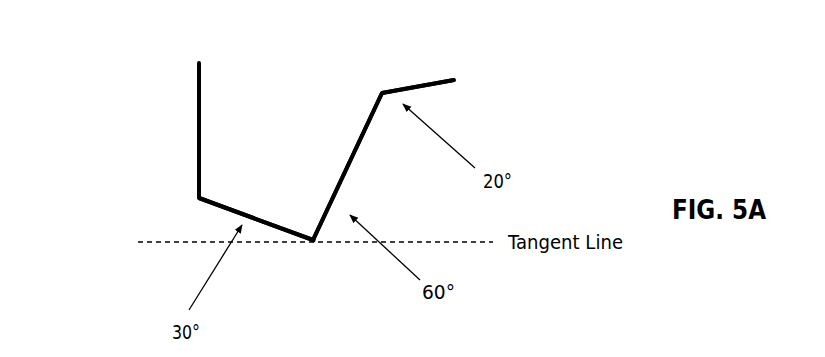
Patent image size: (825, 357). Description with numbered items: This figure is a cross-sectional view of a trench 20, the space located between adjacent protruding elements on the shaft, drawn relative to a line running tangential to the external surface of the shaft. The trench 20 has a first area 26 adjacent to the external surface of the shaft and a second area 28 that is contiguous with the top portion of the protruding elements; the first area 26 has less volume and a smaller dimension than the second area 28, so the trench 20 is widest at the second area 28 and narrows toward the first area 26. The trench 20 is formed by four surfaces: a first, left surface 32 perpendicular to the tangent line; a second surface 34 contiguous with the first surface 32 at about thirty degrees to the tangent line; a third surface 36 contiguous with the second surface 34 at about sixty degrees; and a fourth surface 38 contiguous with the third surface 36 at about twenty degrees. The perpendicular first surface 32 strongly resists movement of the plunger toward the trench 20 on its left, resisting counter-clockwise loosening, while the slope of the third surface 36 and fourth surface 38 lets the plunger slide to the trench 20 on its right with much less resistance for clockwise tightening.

The trench 20 is at (610, 105).
The first area 26 is at (312, 243).
The second area 28 is at (265, 70).
The first surface 32 is at (197, 162).
The second surface 34 is at (247, 218).
The third surface 36 is at (353, 165).
The fourth surface 38 is at (443, 85).